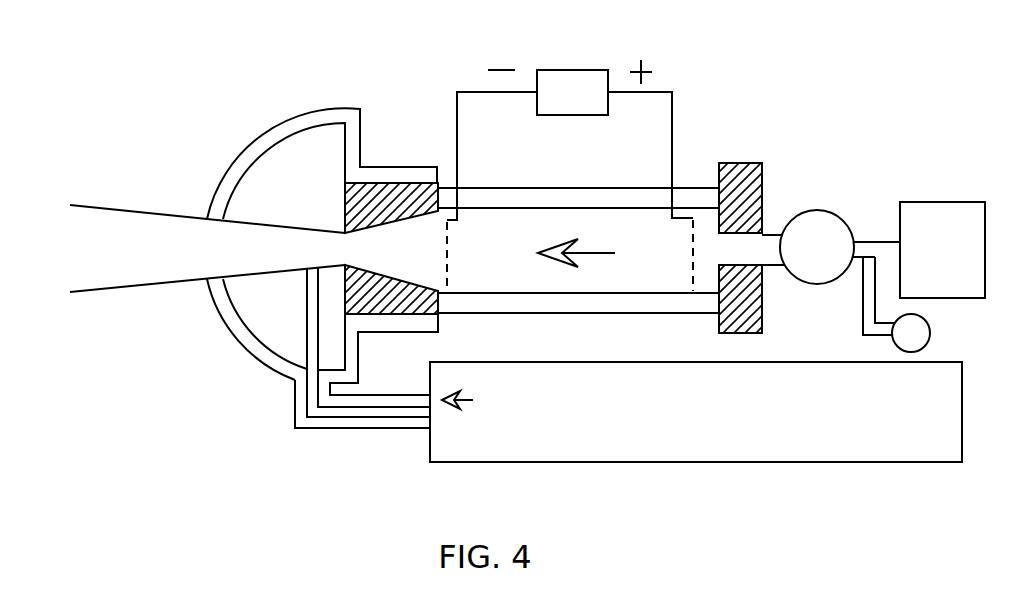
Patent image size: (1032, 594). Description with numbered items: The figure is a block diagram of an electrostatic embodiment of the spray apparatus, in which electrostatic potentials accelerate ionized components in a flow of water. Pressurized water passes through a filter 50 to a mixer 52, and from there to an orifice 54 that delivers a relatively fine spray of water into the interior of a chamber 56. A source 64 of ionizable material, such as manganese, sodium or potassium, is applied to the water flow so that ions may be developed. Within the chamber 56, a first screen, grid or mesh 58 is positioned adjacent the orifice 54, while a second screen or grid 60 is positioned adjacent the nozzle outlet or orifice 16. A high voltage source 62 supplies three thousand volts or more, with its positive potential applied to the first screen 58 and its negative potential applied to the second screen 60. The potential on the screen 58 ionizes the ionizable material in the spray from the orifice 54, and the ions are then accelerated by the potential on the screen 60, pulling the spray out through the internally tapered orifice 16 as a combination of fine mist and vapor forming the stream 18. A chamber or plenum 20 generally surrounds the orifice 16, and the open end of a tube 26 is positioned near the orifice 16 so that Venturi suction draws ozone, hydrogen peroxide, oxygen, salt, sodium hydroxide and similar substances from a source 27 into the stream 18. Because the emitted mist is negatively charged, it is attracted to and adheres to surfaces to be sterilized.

The outlet or orifice 16 is at (343, 232).
The water or cleaning solution stream 18 is at (224, 259).
The chamber or plenum 20 is at (240, 153).
The tube 26 is at (307, 332).
The source of ozone, hydrogen peroxide, oxygen and other compounds 27 is at (687, 462).
The filter 50 is at (933, 202).
The mixer 52 is at (815, 210).
The orifice 54 is at (762, 233).
The chamber 56 is at (587, 187).
The first screen, grid or mesh 58 is at (691, 261).
The second screen or grid 60 is at (447, 243).
The high voltage source 62 is at (585, 69).
The source of ionizable material 64 is at (930, 328).